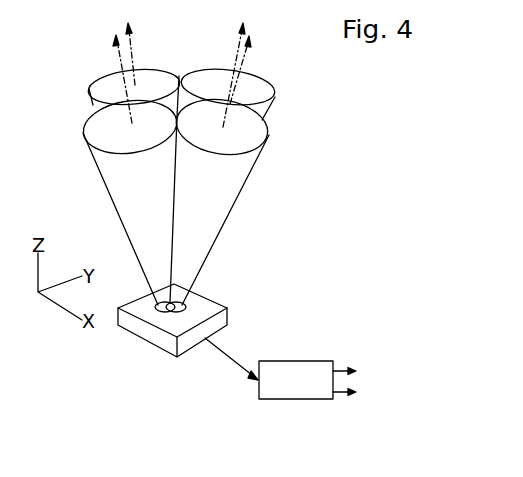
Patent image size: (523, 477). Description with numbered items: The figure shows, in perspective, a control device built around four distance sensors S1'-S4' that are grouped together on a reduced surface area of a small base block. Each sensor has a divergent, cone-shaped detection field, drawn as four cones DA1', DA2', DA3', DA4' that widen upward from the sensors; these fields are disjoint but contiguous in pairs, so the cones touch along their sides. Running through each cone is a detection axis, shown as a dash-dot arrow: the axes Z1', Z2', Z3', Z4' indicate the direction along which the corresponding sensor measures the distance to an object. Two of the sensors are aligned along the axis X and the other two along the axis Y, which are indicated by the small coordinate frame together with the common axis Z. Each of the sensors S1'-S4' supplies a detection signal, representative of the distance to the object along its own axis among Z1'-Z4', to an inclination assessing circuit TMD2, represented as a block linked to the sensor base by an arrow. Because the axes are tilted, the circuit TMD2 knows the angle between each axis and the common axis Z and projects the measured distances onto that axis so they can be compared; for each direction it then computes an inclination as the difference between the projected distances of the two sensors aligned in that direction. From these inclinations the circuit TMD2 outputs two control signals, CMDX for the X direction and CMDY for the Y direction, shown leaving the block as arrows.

The divergent detection field DA1' is at (102, 91).
The divergent detection field DA2' is at (261, 199).
The divergent detection field DA3' is at (267, 92).
The divergent detection field DA4' is at (96, 200).
The detection axis Z1' is at (155, 54).
The detection axis Z2' is at (268, 70).
The detection axis Z3' is at (214, 68).
The detection axis Z4' is at (95, 75).
The distance sensors S1'-S4' is at (214, 320).
The inclination assessing circuit TMD2 is at (323, 388).
The control signal CMDX is at (374, 371).
The control signal CMDY is at (374, 392).